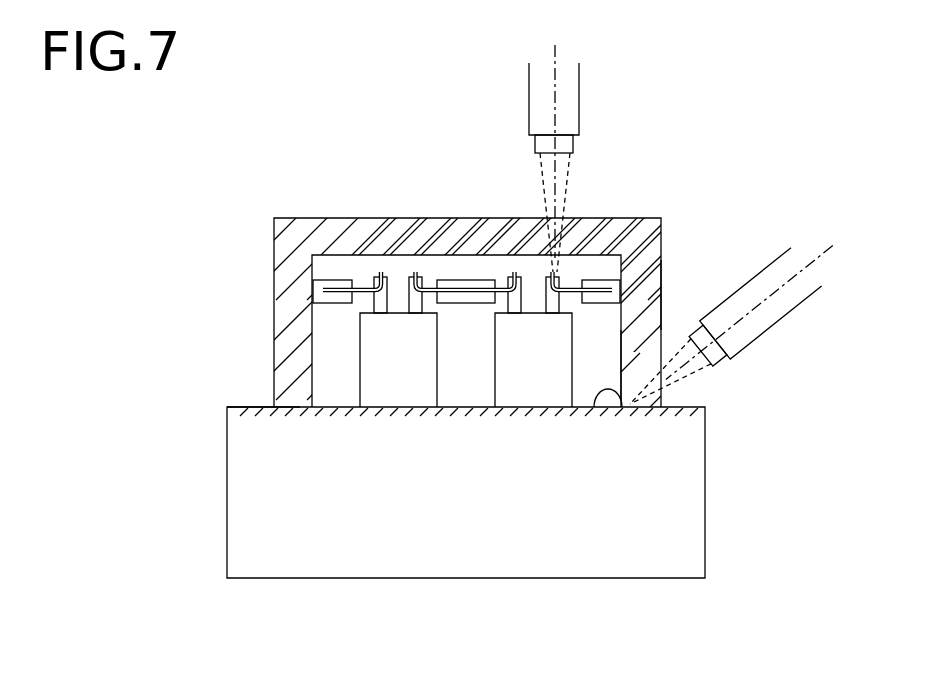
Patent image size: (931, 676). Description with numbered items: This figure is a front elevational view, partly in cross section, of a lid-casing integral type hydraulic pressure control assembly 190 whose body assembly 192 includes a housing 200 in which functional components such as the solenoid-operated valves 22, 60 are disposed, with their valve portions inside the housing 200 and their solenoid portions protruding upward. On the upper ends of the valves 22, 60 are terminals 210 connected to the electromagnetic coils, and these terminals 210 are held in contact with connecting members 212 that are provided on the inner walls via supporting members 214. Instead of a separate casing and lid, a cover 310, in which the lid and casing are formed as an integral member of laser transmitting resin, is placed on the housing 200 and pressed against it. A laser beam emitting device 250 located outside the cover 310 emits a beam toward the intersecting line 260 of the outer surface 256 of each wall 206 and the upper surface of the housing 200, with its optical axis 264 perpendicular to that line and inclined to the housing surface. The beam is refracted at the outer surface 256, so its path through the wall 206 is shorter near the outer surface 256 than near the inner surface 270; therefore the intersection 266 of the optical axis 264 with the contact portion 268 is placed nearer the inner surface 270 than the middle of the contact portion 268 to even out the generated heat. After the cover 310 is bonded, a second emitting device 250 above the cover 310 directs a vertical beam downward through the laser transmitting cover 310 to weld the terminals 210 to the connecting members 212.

The electronic module assembly 190 is at (345, 105).
The body assembly 192 is at (210, 422).
The housing 200 is at (617, 585).
The cover 310 is at (272, 333).
The solenoid-operated valve 22 is at (390, 372).
The solenoid-operated valve 60 is at (518, 383).
The terminals 210 is at (412, 277).
The connecting members 212 is at (366, 288).
The supporting members 214 is at (326, 281).
The laser beam emitting device 250 is at (572, 94).
The outer surface 256 is at (662, 292).
The optical axis 264 is at (787, 284).
The wall 206 is at (645, 360).
The intersecting line 260 is at (663, 402).
The intersection 266 is at (628, 398).
The contact portion 268 is at (597, 408).
The inner surface 270 is at (620, 337).